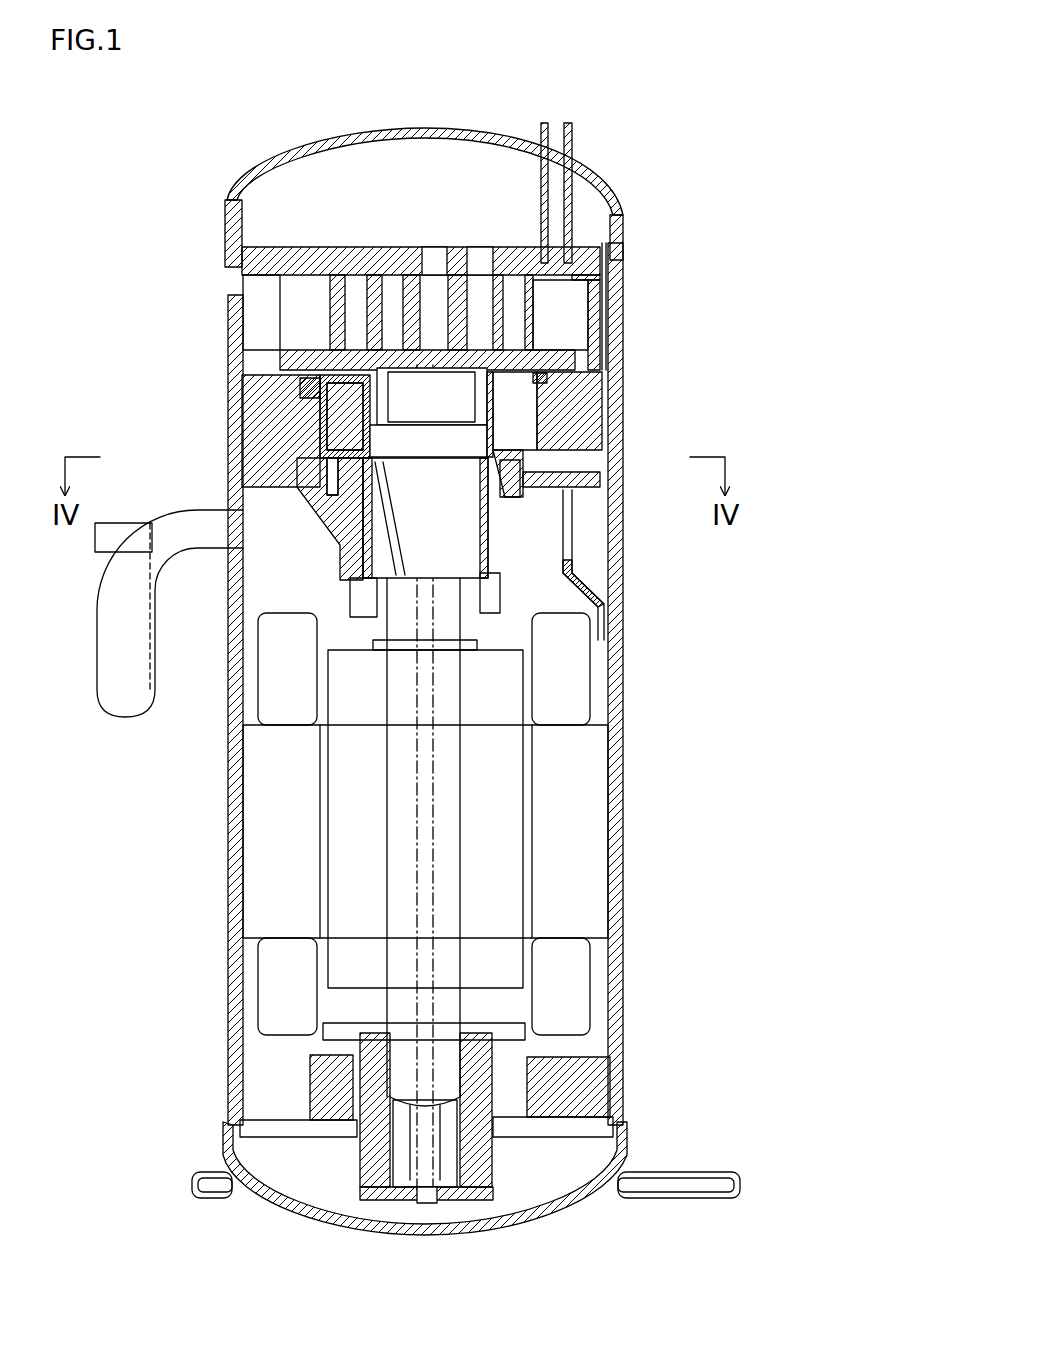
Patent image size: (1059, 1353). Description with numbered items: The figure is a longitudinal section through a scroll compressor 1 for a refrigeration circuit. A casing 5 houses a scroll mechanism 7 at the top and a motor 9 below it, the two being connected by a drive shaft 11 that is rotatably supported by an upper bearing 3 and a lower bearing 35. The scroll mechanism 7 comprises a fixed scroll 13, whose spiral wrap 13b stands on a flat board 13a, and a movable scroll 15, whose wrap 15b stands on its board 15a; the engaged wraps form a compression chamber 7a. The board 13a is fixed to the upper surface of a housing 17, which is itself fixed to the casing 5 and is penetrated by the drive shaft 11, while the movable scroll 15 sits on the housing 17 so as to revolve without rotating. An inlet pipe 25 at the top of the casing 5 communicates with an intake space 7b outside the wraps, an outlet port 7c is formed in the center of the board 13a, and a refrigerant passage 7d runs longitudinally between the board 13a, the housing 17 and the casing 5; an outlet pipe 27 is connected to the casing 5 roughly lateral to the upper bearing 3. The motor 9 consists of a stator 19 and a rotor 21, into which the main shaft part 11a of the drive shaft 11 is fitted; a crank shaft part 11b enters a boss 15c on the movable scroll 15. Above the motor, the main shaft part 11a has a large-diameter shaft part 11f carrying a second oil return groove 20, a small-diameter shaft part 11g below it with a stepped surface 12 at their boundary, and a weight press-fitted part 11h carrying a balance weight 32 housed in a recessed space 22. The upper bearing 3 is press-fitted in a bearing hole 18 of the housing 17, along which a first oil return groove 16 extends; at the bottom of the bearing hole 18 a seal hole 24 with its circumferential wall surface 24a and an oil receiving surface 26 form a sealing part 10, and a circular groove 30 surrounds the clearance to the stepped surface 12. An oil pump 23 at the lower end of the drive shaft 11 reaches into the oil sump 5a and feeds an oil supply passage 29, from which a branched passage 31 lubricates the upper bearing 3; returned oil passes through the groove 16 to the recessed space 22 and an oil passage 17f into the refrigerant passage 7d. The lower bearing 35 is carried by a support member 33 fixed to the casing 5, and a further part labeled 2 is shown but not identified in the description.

The scroll compressor 1 is at (150, 155).
The compression mechanism 2 is at (250, 325).
The upper bearing 3 is at (335, 535).
The casing 5 is at (232, 820).
The oil sump 5a is at (312, 1190).
The scroll mechanism 7 is at (315, 245).
The compression chamber 7a is at (356, 300).
The intake space 7b is at (565, 300).
The outlet port 7c is at (412, 295).
The refrigerant passage 7d is at (620, 330).
The motor 9 is at (280, 1035).
The sealing part 10 is at (150, 698).
The drive shaft 11 is at (482, 742).
The main shaft part 11a is at (696, 505).
The crank shaft part 11b is at (565, 468).
The large-diameter shaft part 11f is at (565, 562).
The small-diameter shaft part 11g is at (590, 610).
The weight press-fitted part 11h is at (505, 508).
The stepped surface 12 is at (363, 620).
The fixed scroll 13 is at (534, 195).
The board 13a is at (480, 265).
The wrap 13b is at (440, 265).
The movable scroll 15 is at (155, 278).
The board 15a is at (300, 335).
The wrap 15b is at (327, 290).
The boss 15c is at (315, 395).
The first oil return groove 16 is at (235, 475).
The housing 17 is at (590, 410).
The oil passage 17f is at (600, 450).
The bearing hole 18 is at (540, 530).
The stator 19 is at (585, 870).
The second oil return groove 20 is at (395, 548).
The rotor 21 is at (500, 808).
The recessed space 22 is at (545, 378).
The oil pump 23 is at (462, 1185).
The seal hole 24 is at (393, 690).
The circumferential wall surface 24a is at (309, 820).
The inlet pipe 25 is at (575, 130).
The oil receiving surface 26 is at (385, 578).
The outlet pipe 27 is at (200, 560).
The oil supply passage 29 is at (427, 688).
The circular groove 30 is at (500, 580).
The branched passage 31 is at (330, 520).
The balance weight 32 is at (335, 425).
The support member 33 is at (610, 1072).
The lower bearing 35 is at (523, 1050).